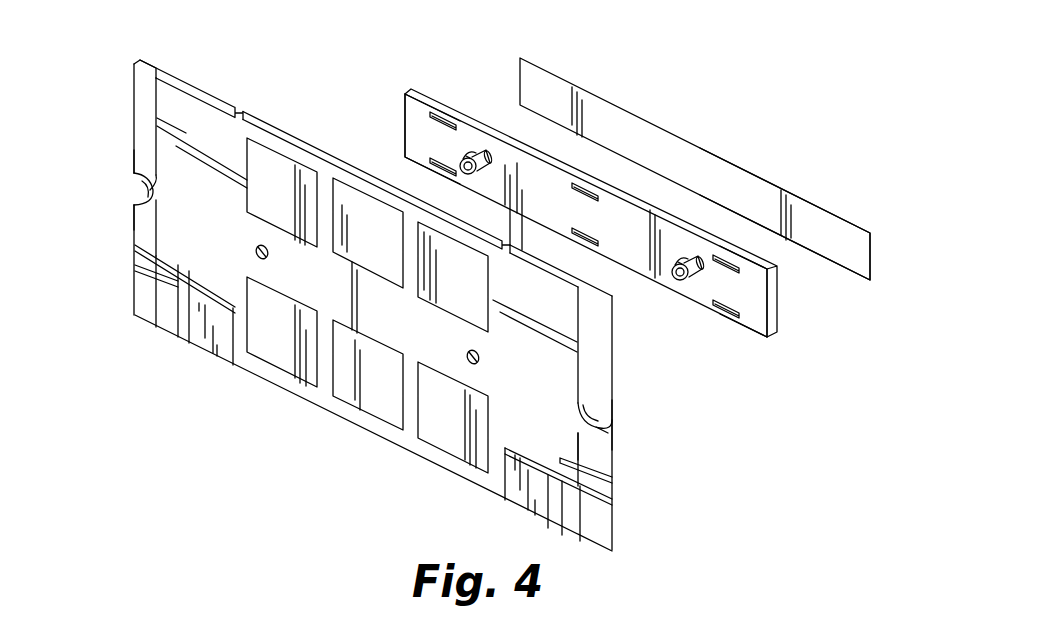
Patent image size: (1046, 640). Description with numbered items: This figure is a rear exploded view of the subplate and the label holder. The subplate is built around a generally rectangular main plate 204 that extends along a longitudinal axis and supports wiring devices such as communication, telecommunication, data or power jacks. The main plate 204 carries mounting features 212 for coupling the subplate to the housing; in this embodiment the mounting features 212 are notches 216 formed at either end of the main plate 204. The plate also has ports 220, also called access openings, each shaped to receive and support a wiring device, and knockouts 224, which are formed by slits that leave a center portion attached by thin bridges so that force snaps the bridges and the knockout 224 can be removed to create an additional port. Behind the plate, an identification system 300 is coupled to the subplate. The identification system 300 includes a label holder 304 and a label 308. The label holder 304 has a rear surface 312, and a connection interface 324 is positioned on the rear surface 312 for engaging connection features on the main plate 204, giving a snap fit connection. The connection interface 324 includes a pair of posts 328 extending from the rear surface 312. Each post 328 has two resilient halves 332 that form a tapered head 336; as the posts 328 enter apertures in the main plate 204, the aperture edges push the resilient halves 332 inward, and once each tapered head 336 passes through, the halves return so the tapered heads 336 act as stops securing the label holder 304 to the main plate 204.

The main plate 204 is at (183, 114).
The mounting features 212 is at (140, 190).
The notches 216 is at (152, 192).
The ports 220 is at (365, 210).
The knockouts 224 is at (267, 153).
The identification system 300 is at (622, 83).
The label holder 304 is at (777, 308).
The label 308 is at (763, 197).
The rear surface 312 is at (753, 293).
The connection interface 324 is at (429, 135).
The posts 328 is at (490, 140).
The resilient halves 332 is at (672, 268).
The tapered head 336 is at (470, 150).